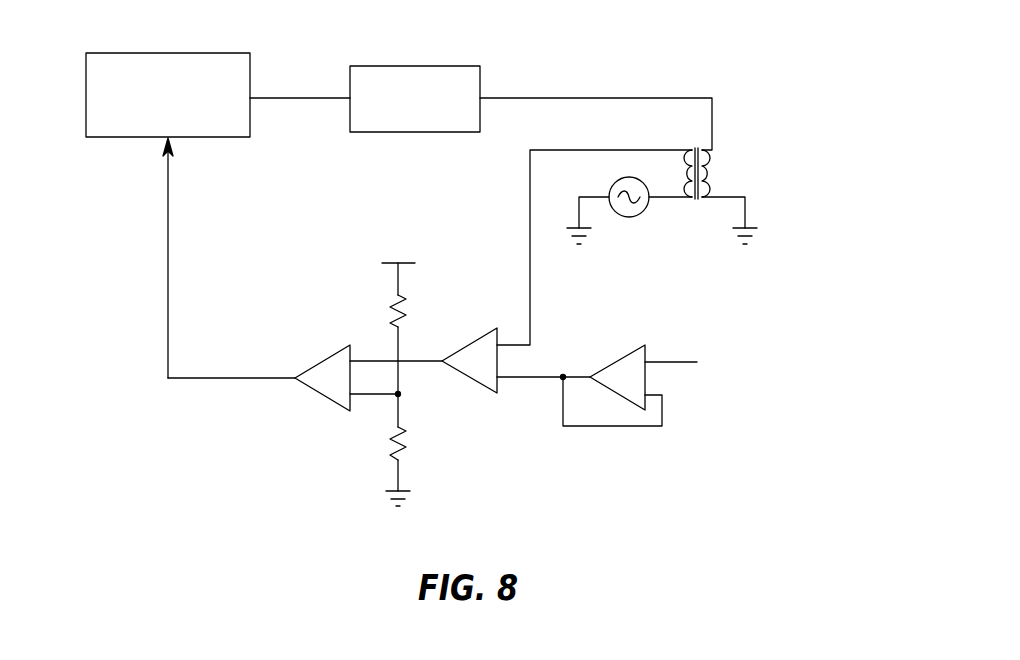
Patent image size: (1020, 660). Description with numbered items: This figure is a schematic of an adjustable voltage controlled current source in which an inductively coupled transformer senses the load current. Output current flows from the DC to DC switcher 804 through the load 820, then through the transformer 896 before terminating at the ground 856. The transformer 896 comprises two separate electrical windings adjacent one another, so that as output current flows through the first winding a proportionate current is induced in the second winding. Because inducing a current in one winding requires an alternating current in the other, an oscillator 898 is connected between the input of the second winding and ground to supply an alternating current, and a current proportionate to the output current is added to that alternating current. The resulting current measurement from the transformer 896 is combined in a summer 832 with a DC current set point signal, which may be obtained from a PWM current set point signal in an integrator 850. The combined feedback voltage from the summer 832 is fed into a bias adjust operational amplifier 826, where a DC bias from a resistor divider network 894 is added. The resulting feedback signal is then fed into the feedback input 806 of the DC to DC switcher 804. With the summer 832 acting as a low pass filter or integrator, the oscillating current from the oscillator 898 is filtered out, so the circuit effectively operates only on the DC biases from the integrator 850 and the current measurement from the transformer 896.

The DC to DC switcher 804 is at (112, 138).
The feedback input 806 is at (172, 138).
The load 820 is at (430, 66).
The bias adjust operational amplifier 826 is at (315, 395).
The summer 832 is at (470, 380).
The integrator 850 is at (610, 362).
The ground 856 is at (755, 228).
The resistor divider network 894 is at (366, 474).
The transformer 896 is at (703, 170).
The oscillator 898 is at (630, 218).